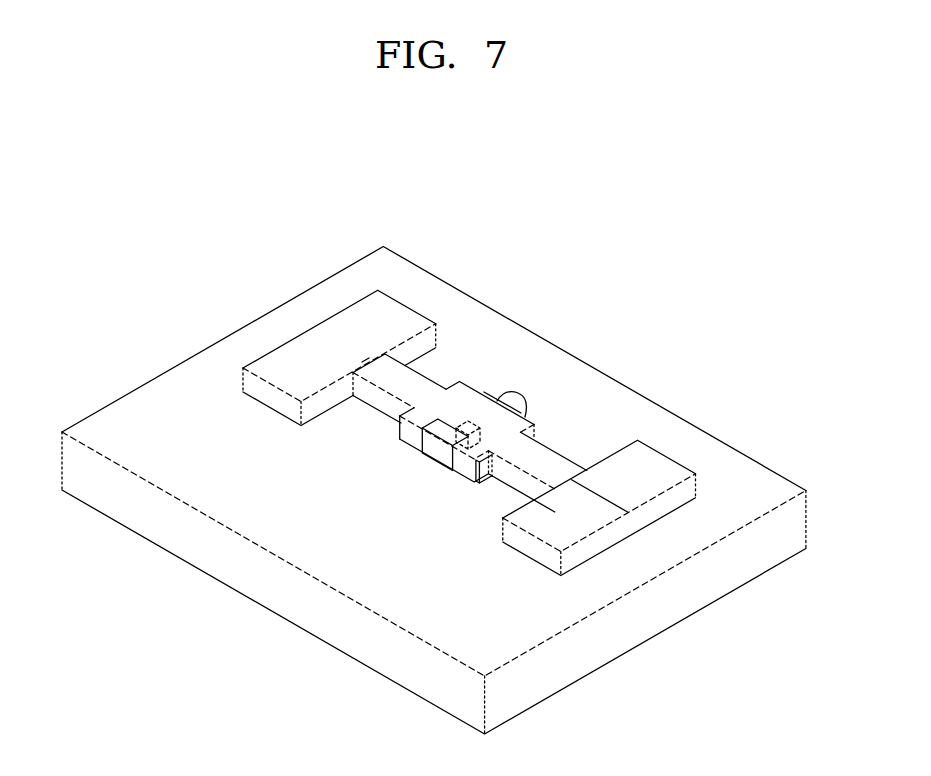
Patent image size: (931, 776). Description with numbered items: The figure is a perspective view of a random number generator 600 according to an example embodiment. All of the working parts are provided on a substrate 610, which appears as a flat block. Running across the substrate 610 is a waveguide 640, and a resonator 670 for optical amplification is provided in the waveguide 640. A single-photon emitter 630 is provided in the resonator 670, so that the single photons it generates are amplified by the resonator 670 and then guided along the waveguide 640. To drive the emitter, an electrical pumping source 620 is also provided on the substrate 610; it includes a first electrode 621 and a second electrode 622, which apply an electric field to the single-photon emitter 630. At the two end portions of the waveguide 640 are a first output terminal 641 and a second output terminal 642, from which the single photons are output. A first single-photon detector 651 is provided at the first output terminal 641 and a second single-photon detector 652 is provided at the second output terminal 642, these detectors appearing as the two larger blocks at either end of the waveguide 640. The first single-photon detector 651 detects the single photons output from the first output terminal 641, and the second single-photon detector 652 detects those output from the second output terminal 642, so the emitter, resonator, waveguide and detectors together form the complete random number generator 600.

The random number generator 600 is at (697, 285).
The substrate 610 is at (650, 630).
The electrical pumping source 620 is at (451, 458).
The first electrode 621 is at (430, 467).
The second electrode 622 is at (490, 456).
The single-photon emitter 630 is at (473, 420).
The waveguide 640 is at (393, 385).
The first output terminal 641 is at (366, 360).
The second output terminal 642 is at (622, 512).
The first single-photon detector 651 is at (402, 312).
The second single-photon detector 652 is at (670, 452).
The resonator 670 is at (530, 418).